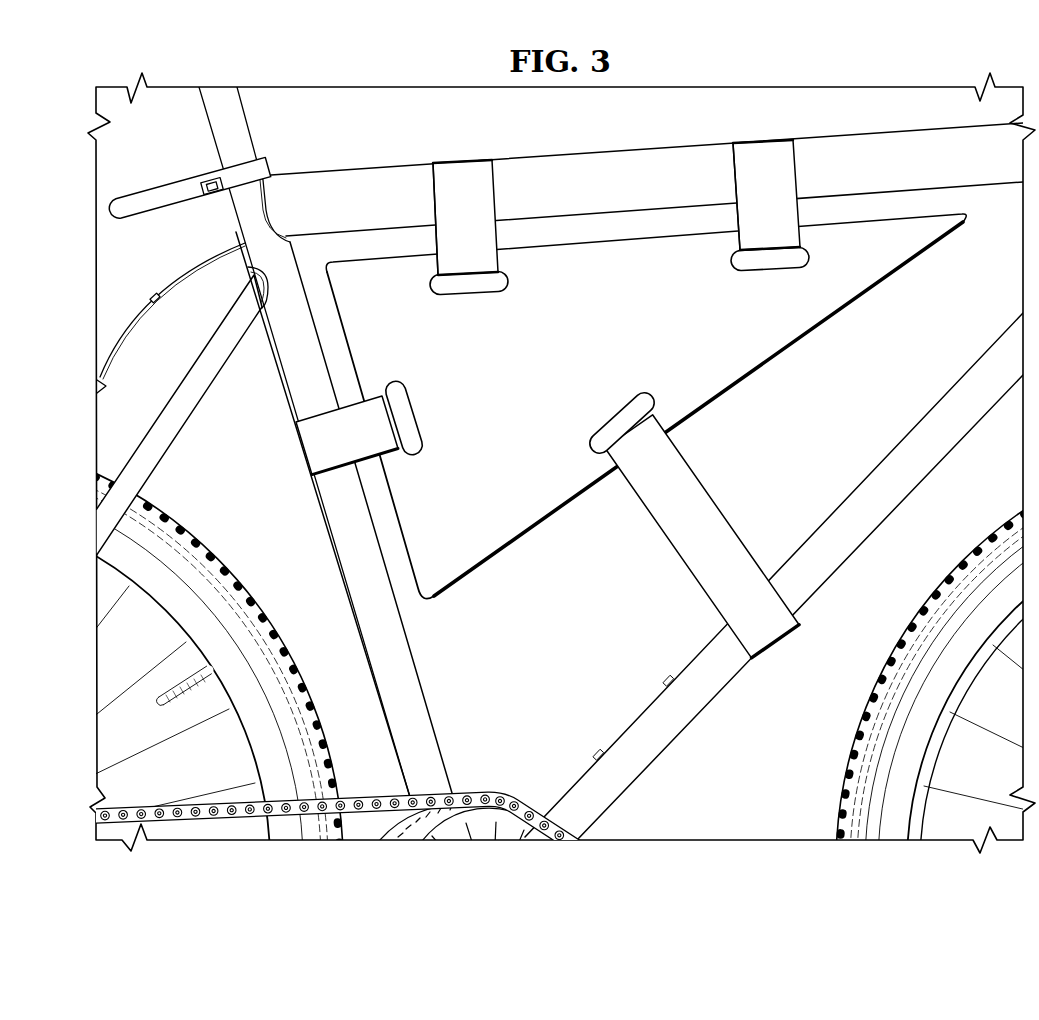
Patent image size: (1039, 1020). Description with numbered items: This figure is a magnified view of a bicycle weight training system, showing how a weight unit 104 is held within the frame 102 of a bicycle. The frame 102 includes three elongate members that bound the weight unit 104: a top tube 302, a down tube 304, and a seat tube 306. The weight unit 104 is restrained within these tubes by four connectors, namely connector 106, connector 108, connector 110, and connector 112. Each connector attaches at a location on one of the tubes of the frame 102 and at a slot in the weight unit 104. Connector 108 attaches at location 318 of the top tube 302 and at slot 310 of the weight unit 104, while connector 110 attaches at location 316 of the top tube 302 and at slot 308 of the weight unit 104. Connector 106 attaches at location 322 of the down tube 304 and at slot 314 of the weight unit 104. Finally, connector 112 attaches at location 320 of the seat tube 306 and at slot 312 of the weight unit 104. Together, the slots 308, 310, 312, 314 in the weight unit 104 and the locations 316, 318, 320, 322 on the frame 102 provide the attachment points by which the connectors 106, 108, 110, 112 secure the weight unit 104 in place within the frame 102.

The frame 102 is at (559, 463).
The weight unit 104 is at (613, 346).
The connector 106 is at (723, 515).
The connector 108 is at (762, 142).
The connector 110 is at (462, 162).
The connector 112 is at (295, 437).
The top tube 302 is at (612, 152).
The down tube 304 is at (840, 569).
The seat tube 306 is at (331, 536).
The slot 308 is at (470, 290).
The slot 310 is at (773, 268).
The slot 312 is at (411, 418).
The slot 314 is at (617, 420).
The location 316 is at (431, 212).
The location 318 is at (731, 187).
The location 320 is at (298, 476).
The location 322 is at (782, 653).